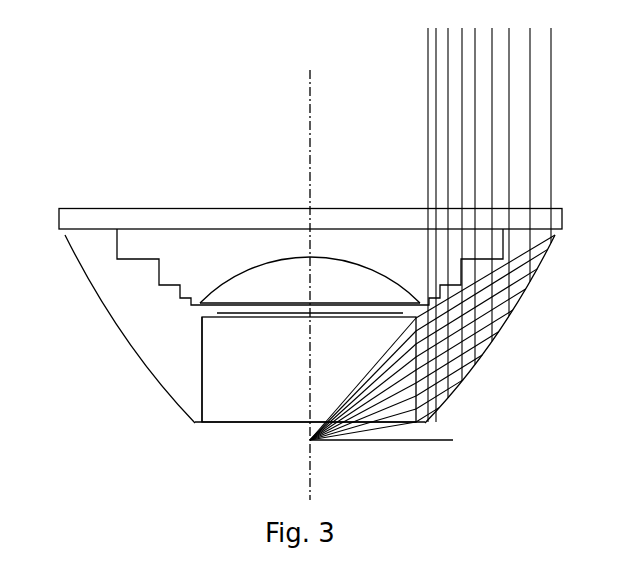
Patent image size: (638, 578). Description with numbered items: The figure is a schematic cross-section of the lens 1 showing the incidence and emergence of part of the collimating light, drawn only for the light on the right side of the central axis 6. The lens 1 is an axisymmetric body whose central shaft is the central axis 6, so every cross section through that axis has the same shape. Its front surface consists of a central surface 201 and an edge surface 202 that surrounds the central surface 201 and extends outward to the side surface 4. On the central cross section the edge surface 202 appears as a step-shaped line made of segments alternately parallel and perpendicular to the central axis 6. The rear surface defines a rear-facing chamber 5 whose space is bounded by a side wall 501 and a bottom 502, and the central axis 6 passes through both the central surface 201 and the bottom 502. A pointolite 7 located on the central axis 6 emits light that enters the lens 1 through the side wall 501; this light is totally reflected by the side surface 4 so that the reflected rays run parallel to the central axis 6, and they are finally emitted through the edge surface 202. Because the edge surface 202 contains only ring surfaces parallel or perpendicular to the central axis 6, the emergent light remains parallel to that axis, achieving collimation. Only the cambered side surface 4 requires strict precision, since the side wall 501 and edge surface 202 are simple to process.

The lens 1 is at (300, 321).
The side surface 4 is at (83, 267).
The chamber 5 is at (272, 403).
The central axis 6 is at (258, 278).
The pointolite 7 is at (383, 388).
The central surface 201 is at (293, 258).
The edge surface 202 is at (152, 258).
The side wall 501 is at (202, 377).
The bottom 502 is at (283, 320).